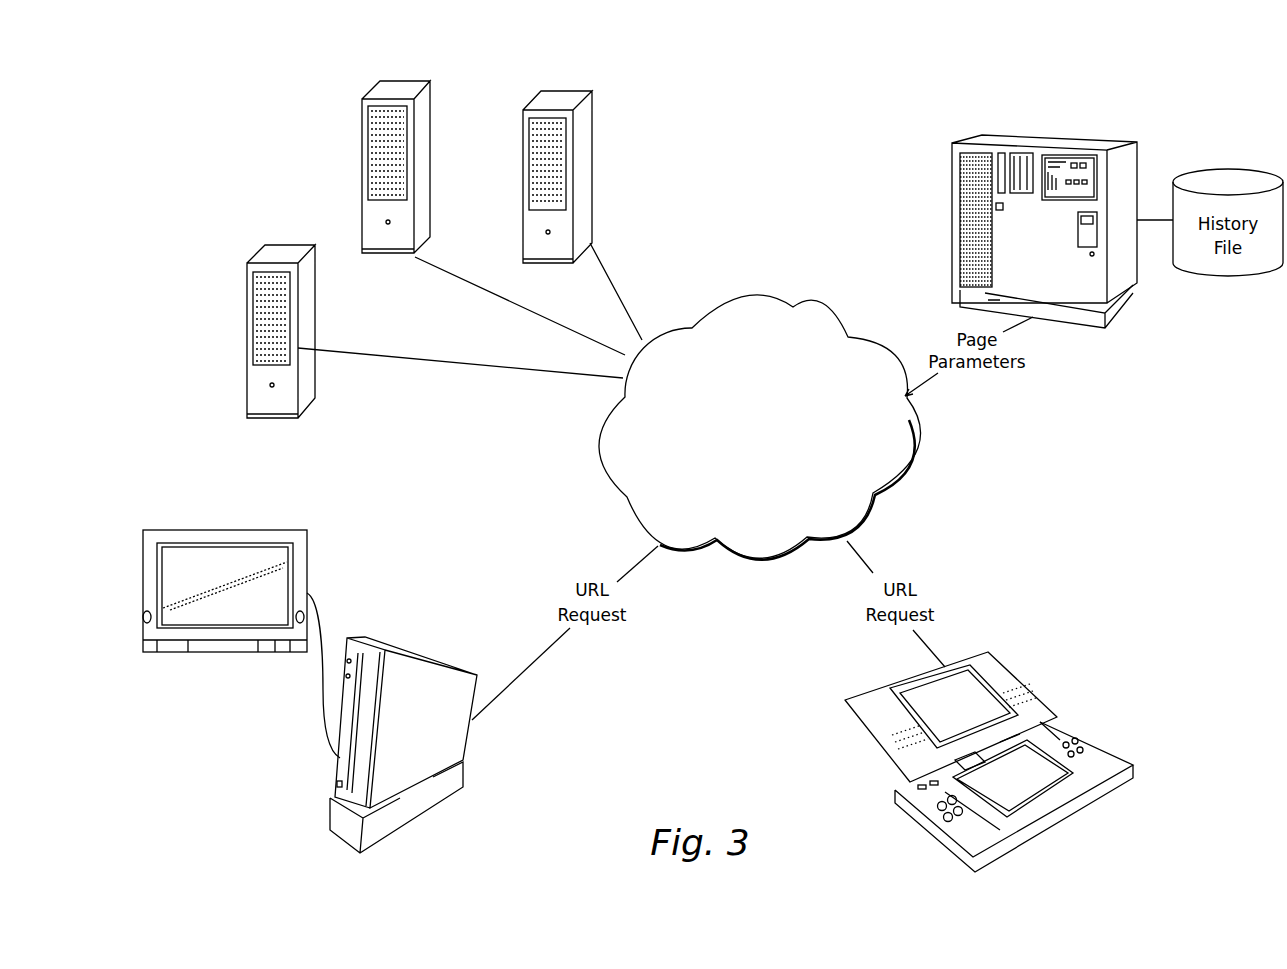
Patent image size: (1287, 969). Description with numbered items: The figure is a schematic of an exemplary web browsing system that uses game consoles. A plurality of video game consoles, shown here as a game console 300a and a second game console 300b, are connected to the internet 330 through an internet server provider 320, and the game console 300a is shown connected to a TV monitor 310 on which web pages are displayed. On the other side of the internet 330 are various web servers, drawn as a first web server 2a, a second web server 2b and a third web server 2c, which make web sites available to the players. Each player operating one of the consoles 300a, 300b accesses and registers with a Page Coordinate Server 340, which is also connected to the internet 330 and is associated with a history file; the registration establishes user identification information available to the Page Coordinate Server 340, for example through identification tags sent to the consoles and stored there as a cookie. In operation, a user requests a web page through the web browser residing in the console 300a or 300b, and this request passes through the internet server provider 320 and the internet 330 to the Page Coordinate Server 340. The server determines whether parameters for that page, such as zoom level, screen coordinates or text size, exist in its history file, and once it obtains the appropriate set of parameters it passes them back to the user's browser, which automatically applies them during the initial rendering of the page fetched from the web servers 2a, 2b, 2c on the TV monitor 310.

The web server 2a is at (275, 255).
The web server 2b is at (427, 147).
The web server 2c is at (588, 158).
The internet 330 is at (915, 463).
The Page Coordinate Server 340 is at (955, 200).
The TV monitor 310 is at (213, 557).
The video game console 300a is at (418, 675).
The video game console 300b is at (1103, 747).
The internet server provider (ISP) 320 is at (523, 673).